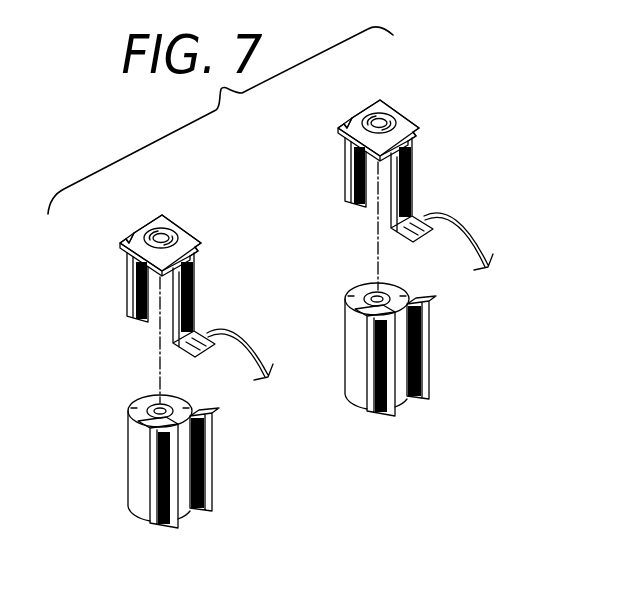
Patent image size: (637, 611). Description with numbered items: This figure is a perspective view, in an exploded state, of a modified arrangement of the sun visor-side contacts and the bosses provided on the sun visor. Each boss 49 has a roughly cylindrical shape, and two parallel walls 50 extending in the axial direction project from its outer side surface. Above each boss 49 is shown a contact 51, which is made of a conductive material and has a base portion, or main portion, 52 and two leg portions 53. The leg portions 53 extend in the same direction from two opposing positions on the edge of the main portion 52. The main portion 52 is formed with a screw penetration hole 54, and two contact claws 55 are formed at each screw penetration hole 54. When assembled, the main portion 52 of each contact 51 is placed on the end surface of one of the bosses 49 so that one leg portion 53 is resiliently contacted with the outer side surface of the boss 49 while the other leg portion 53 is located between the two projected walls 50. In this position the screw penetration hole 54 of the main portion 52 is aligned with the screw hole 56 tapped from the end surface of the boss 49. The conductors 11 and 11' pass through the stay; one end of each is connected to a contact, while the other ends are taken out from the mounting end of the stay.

The conductor 11 is at (478, 241).
The conductor 11' is at (255, 347).
The boss 49 is at (130, 473).
The parallel wall 50 is at (213, 455).
The contact 51 is at (203, 244).
The base portion 52 is at (193, 233).
The leg portion 53 is at (130, 292).
The screw penetration hole 54 is at (160, 231).
The contact claw 55 is at (172, 232).
The screw hole 56 is at (155, 407).